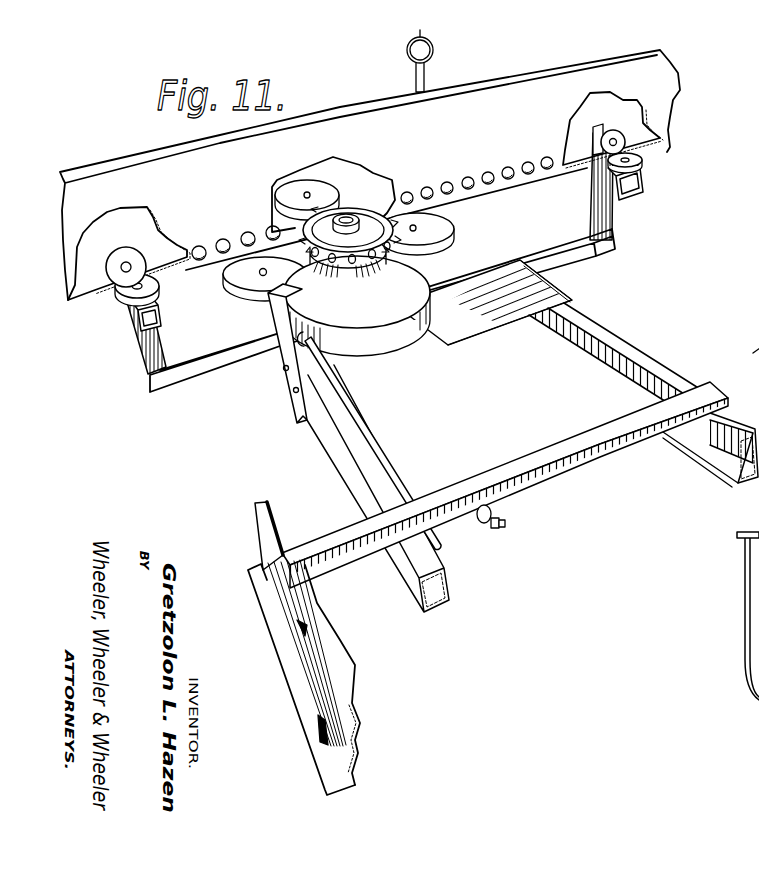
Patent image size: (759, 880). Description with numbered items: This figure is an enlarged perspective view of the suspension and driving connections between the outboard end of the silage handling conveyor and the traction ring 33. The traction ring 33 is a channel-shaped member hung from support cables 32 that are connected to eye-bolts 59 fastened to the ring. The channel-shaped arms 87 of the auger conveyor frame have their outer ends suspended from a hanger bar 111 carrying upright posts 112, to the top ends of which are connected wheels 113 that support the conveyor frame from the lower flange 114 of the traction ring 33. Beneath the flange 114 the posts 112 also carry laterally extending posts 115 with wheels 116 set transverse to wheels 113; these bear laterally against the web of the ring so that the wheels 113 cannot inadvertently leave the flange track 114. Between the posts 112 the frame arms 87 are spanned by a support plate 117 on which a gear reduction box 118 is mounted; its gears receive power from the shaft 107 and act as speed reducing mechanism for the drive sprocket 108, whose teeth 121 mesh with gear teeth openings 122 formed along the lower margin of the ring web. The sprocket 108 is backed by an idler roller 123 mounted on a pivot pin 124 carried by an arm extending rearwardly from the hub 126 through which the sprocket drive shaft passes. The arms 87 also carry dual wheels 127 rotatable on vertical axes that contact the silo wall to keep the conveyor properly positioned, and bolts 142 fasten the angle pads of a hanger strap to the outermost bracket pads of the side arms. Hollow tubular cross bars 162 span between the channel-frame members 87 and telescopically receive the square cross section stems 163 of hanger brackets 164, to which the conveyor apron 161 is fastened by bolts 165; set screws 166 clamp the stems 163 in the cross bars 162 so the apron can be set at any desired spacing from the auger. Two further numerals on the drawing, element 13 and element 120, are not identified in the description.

The frame member 13 is at (752, 283).
The support cables 32 is at (423, 32).
The traction ring 33 is at (557, 87).
The eye-bolts 59 is at (423, 78).
The channel-shaped arms 87 is at (357, 490).
The shaft 107 is at (393, 483).
The drive sprocket 108 is at (370, 210).
The hanger bar 111 is at (576, 257).
The upright posts 112 is at (142, 355).
The wheels 113 is at (118, 250).
The lower flange 114 is at (660, 138).
The laterally extending posts 115 is at (163, 318).
The wheels 116 is at (122, 297).
The support plate 117 is at (484, 305).
The gear reduction box 118 is at (376, 342).
The hub 120 is at (368, 215).
The teeth 121 is at (383, 249).
The gear teeth openings 122 is at (487, 178).
The idler roller 123 is at (291, 187).
The pivot pin 124 is at (310, 193).
The hub 126 is at (343, 270).
The dual wheels 127 is at (438, 238).
The bolts 142 is at (758, 491).
The conveyor apron 161 is at (283, 661).
The hollow tubular cross bars 162 is at (496, 471).
The stems 163 is at (325, 565).
The hanger brackets 164 is at (317, 687).
The bolts 165 is at (320, 727).
The set screws 166 is at (492, 517).